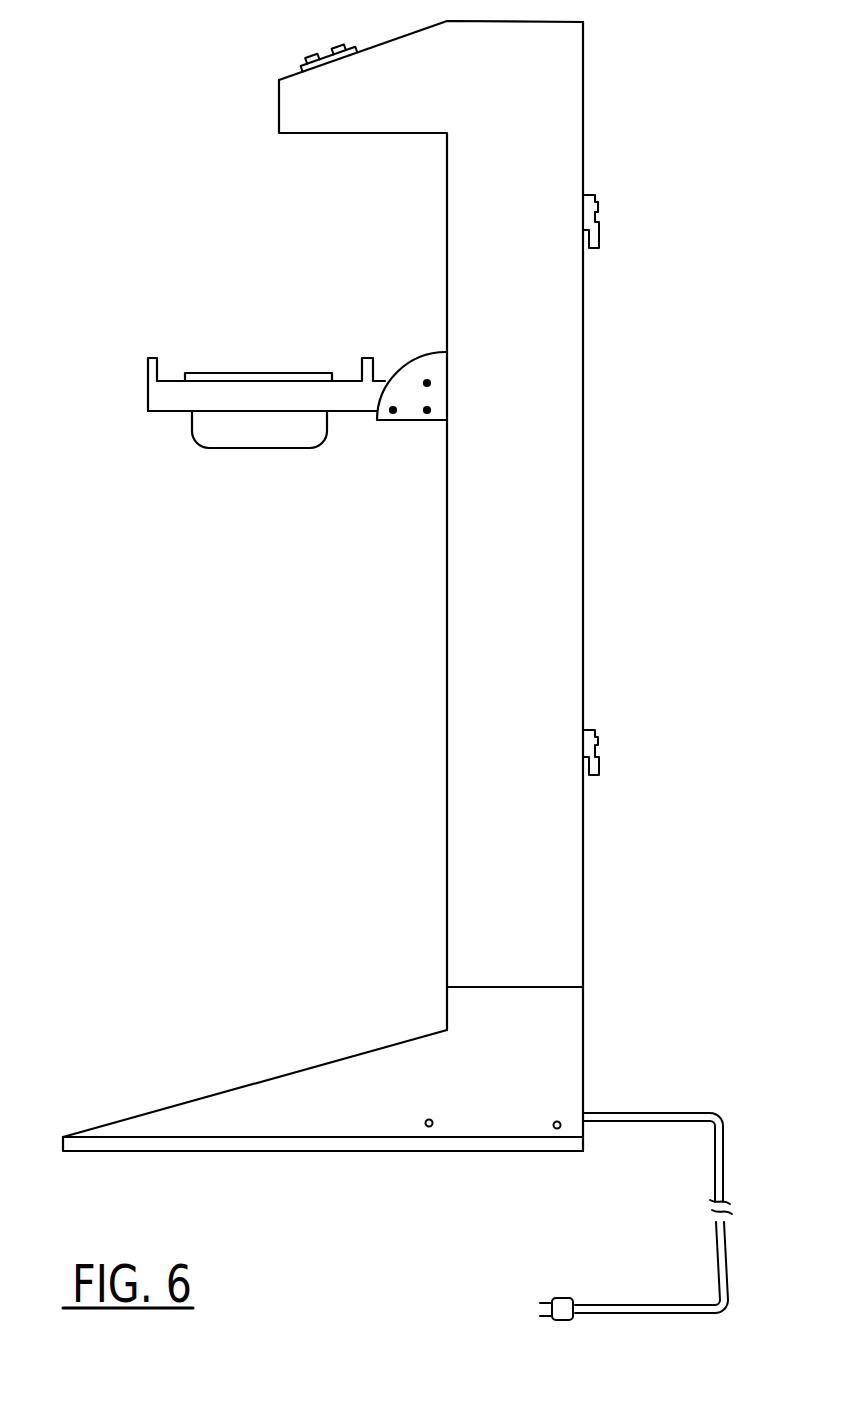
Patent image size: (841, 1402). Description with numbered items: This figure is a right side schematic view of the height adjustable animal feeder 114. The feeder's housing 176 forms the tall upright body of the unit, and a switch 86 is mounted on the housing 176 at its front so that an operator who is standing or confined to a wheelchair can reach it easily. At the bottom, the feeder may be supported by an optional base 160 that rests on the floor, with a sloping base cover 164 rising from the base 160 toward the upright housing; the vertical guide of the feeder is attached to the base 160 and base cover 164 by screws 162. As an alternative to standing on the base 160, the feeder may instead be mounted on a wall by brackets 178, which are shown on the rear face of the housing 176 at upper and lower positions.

The switch 86 is at (326, 52).
The height adjustable animal feeder 114 is at (586, 50).
The housing 176 is at (563, 103).
The brackets 178 is at (599, 230).
The base cover 164 is at (228, 1088).
The screws 162 is at (431, 1128).
The base 160 is at (567, 1145).